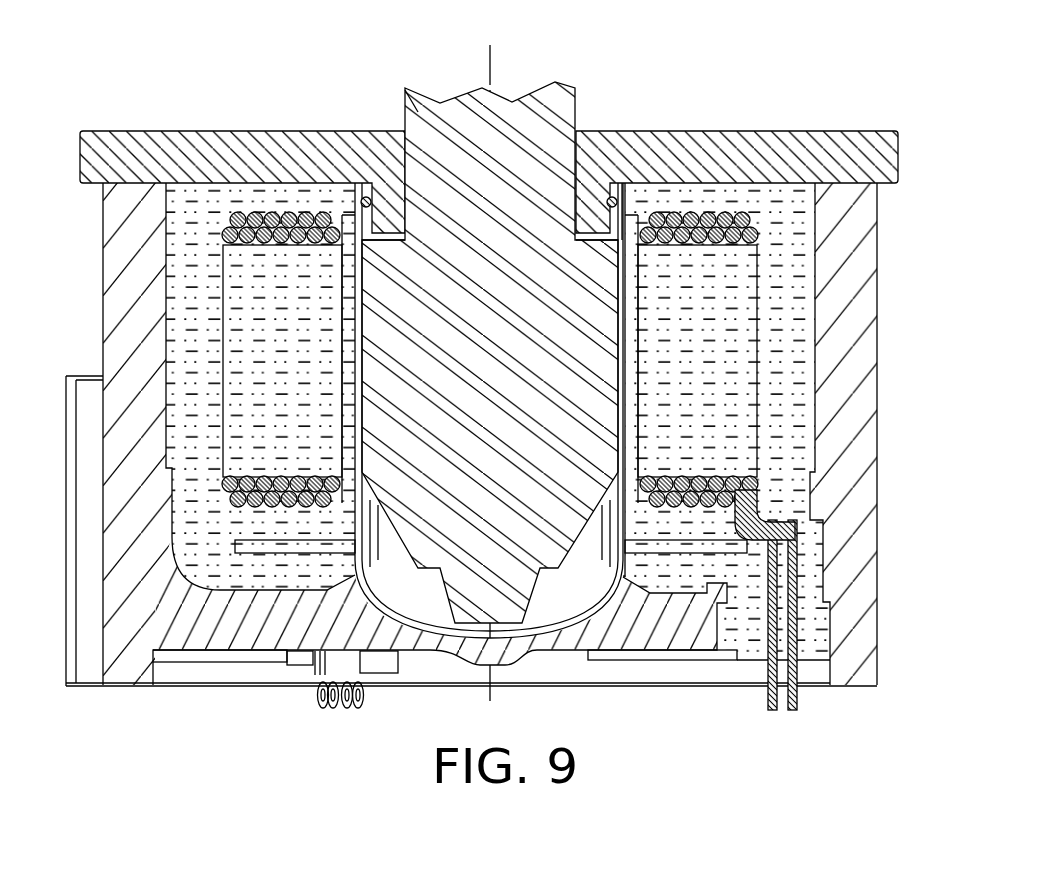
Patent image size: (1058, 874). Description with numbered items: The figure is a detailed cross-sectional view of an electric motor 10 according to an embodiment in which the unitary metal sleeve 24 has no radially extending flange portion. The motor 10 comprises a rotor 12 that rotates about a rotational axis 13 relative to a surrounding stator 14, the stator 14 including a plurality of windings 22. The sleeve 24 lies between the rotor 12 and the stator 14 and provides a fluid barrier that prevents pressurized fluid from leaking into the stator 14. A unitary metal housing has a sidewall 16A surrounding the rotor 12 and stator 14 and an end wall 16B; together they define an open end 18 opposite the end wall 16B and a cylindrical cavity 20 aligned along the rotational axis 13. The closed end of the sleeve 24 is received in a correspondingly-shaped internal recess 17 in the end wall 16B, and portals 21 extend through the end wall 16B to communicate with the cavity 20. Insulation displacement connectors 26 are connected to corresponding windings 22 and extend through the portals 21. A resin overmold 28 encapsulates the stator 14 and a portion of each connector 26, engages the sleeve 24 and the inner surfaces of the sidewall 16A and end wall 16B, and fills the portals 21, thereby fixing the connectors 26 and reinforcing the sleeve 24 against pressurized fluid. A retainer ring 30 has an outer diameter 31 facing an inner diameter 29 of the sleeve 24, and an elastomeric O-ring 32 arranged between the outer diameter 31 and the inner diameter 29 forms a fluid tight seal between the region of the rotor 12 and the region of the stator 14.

The electric motor 10 is at (708, 60).
The rotor 12 is at (406, 92).
The rotational axis 13 is at (490, 72).
The stator 14 is at (222, 375).
The sidewall 16A is at (863, 290).
The end wall 16B is at (575, 648).
The internal recess 17 is at (438, 615).
The open end 18 is at (188, 178).
The cylindrical cavity 20 is at (188, 318).
The portals 21 is at (723, 630).
The windings 22 is at (286, 215).
The unitary metal sleeve 24 is at (369, 197).
The insulation displacement connectors 26 is at (318, 706).
The resin overmold 28 is at (197, 233).
The inner diameter 29 is at (610, 229).
The retainer ring 30 is at (198, 148).
The outer diameter 31 is at (618, 213).
The elastomeric O-ring 32 is at (611, 195).